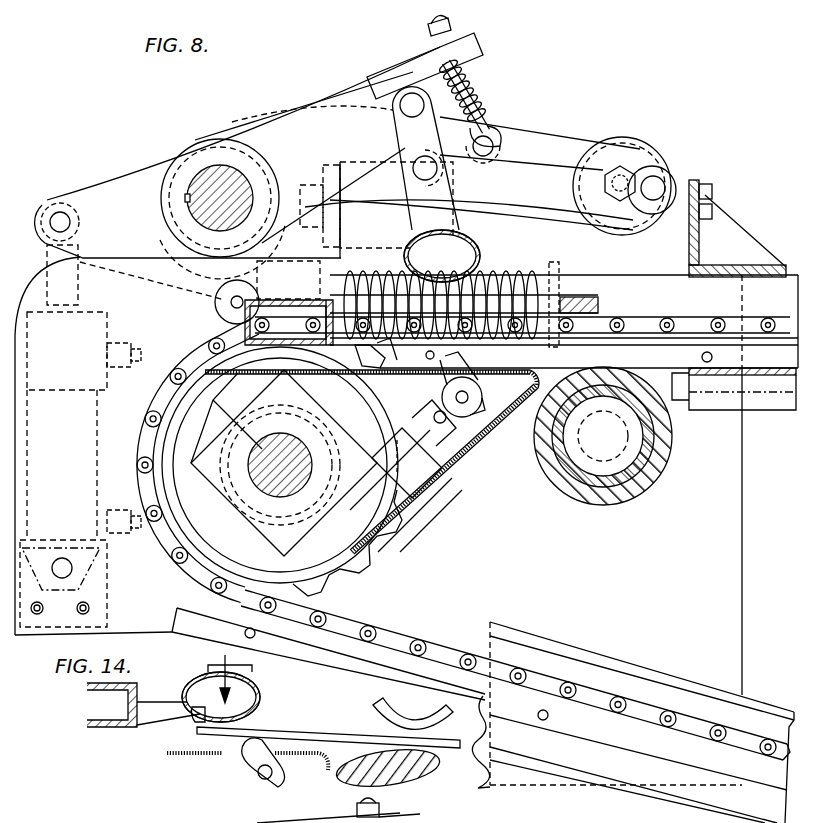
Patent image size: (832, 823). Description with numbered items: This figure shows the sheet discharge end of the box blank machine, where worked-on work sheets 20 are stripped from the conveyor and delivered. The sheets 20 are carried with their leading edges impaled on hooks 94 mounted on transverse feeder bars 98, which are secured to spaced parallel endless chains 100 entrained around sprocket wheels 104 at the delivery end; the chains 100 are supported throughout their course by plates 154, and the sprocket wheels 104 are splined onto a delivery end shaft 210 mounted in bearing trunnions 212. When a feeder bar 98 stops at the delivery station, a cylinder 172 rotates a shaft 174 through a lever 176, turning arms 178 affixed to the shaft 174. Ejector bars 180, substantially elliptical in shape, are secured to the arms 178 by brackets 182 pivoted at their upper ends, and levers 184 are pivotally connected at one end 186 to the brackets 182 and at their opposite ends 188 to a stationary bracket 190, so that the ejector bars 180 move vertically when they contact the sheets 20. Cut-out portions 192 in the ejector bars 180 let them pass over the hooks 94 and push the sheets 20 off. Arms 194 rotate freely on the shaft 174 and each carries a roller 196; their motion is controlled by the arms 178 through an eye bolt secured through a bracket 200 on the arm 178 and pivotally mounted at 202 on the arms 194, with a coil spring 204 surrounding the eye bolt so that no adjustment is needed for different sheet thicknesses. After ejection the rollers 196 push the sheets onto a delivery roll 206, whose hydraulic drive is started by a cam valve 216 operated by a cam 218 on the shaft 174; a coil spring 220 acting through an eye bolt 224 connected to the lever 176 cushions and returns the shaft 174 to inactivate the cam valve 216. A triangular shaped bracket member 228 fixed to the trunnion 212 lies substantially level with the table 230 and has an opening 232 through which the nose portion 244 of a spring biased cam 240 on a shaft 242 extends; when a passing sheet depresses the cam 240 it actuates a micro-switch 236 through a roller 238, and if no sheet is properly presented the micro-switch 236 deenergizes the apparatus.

In FIG. 14, the work sheets 20 is at (331, 734).
In FIG. 8, the hooks 94 is at (395, 340).
In FIG. 14, the hooks 94 is at (196, 716).
In FIG. 8, the feeder bars 98 is at (275, 304).
In FIG. 14, the feeder bars 98 is at (92, 702).
In FIG. 8, the endless chains 100 is at (433, 647).
In FIG. 8, the sprocket wheels 104 is at (414, 562).
In FIG. 8, the plates 154 is at (679, 341).
In FIG. 8, the cylinder 172 is at (93, 430).
In FIG. 8, the shaft 174 is at (213, 175).
In FIG. 8, the lever 176 is at (120, 188).
In FIG. 8, the arms 178 is at (341, 86).
In FIG. 14, the arms 178 is at (250, 822).
In FIG. 8, the ejector bars 180 is at (481, 235).
In FIG. 14, the ejector bars 180 is at (262, 697).
In FIG. 8, the brackets 182 is at (403, 123).
In FIG. 8, the levers 184 is at (553, 158).
In FIG. 8, the end of lever 186 is at (437, 173).
In FIG. 8, the opposite end of lever 188 is at (663, 180).
In FIG. 8, the stationary bracket 190 is at (679, 227).
In FIG. 8, the cut-out portions 192 is at (405, 256).
In FIG. 14, the cut-out portions 192 is at (187, 693).
In FIG. 8, the arms 194 is at (513, 137).
In FIG. 8, the roller 196 is at (640, 142).
In FIG. 14, the roller 196 is at (405, 714).
In FIG. 8, the bracket 200 is at (470, 45).
In FIG. 14, the bracket 200 is at (412, 810).
In FIG. 8, the pivotal mounting 202 is at (485, 143).
In FIG. 8, the coil spring 204 is at (473, 75).
In FIG. 8, the delivery roll 206 is at (623, 504).
In FIG. 14, the delivery roll 206 is at (427, 768).
In FIG. 8, the delivery end shaft 210 is at (268, 440).
In FIG. 8, the bearing trunnions 212 is at (277, 538).
In FIG. 8, the cam valve 216 is at (330, 162).
In FIG. 8, the cam 218 is at (218, 270).
In FIG. 8, the coil spring 220 is at (538, 268).
In FIG. 8, the eye bolt 224 is at (220, 305).
In FIG. 8, the triangular shaped bracket member 228 is at (436, 462).
In FIG. 8, the table 230 is at (764, 377).
In FIG. 8, the opening 232 is at (400, 391).
In FIG. 8, the micro-switch 236 is at (420, 492).
In FIG. 8, the roller 238 is at (459, 435).
In FIG. 8, the cam 240 is at (412, 416).
In FIG. 14, the cam 240 is at (250, 768).
In FIG. 8, the shaft 242 is at (510, 406).
In FIG. 8, the nose portion 244 is at (458, 356).